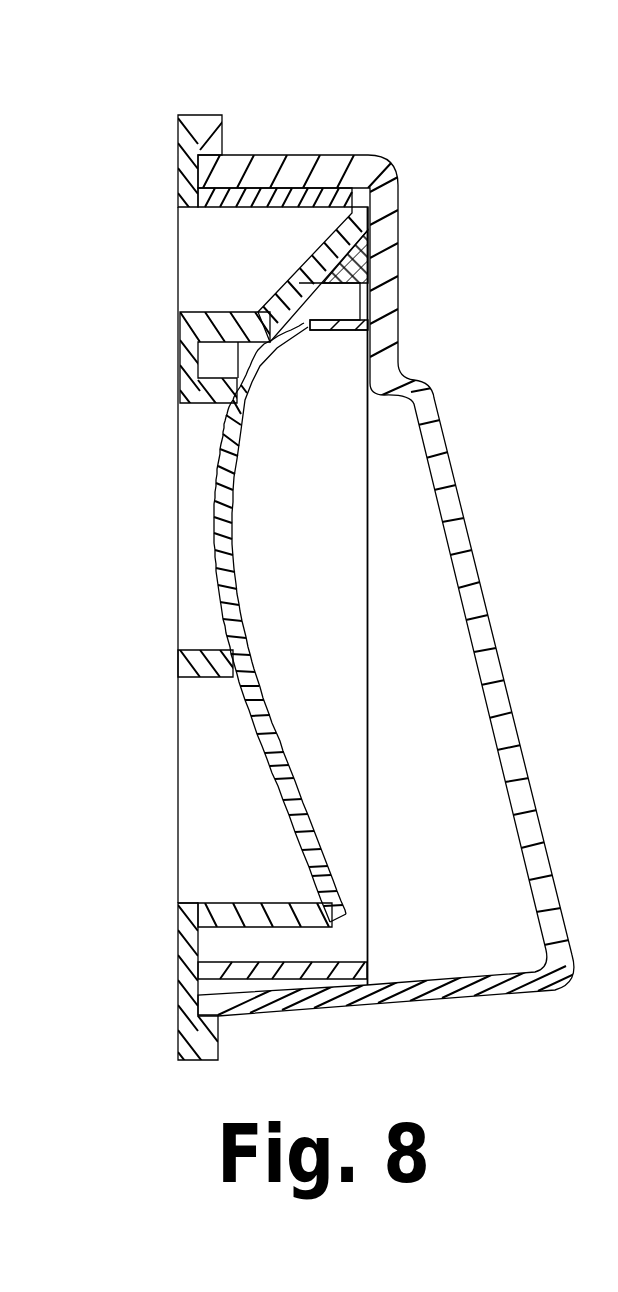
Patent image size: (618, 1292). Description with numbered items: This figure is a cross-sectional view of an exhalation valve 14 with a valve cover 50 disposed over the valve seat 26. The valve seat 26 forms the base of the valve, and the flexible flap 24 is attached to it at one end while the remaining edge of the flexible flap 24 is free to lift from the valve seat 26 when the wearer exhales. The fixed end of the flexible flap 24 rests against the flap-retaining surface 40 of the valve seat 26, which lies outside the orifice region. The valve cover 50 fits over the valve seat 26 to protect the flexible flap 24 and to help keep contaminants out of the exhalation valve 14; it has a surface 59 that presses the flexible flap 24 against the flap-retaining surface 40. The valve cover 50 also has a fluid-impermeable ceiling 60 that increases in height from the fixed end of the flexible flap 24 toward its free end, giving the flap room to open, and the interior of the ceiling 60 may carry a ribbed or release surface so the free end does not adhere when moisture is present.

The exhalation valve 14 is at (442, 88).
The flexible flap 24 is at (213, 553).
The valve seat 26 is at (177, 187).
The flap-retaining surface 40 is at (366, 263).
The valve cover 50 is at (400, 183).
The surface 59 is at (333, 263).
The ceiling 60 is at (473, 583).